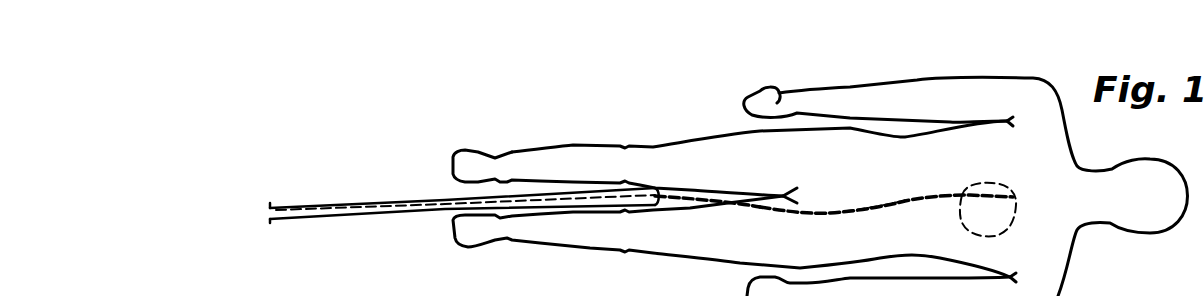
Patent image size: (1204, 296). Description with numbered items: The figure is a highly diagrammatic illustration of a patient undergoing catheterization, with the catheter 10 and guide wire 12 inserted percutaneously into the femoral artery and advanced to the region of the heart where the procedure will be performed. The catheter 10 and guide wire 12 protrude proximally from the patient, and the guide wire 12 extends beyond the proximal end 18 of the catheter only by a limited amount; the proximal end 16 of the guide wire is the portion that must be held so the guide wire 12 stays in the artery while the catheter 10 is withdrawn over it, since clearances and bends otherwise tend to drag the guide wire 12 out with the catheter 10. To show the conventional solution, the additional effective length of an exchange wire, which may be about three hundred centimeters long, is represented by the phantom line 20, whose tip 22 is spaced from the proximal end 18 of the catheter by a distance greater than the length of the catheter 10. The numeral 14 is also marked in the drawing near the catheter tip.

The catheter 10 is at (902, 200).
The guide wire 12 is at (684, 196).
The catheter tip in bladder 14 is at (1018, 193).
The proximal end of the guide wire 16 is at (657, 186).
The proximal end of the catheter 18 is at (703, 198).
The phantom line 20 is at (446, 211).
The tip of the exchange wire 22 is at (268, 204).